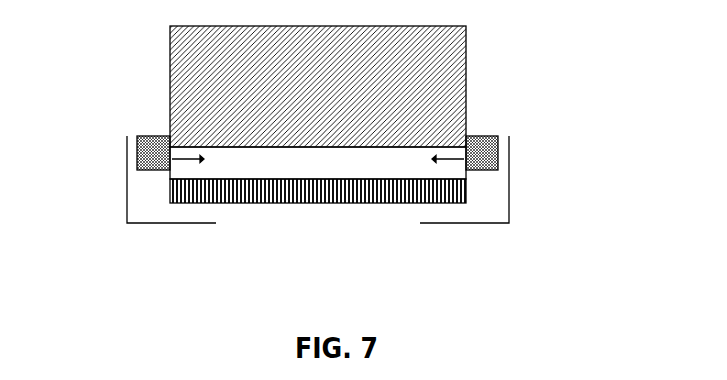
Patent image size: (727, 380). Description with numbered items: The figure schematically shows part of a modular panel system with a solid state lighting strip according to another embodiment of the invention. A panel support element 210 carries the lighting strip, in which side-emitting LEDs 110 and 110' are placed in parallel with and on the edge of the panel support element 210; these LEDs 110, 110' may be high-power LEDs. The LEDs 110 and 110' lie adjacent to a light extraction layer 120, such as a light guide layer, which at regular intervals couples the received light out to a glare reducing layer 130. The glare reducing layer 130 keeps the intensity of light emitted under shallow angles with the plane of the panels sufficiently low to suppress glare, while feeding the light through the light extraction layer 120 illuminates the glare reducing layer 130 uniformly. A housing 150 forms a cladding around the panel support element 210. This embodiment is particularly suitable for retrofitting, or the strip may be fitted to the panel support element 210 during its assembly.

The panel support element 210 is at (453, 72).
The light extraction layer 120 is at (226, 168).
The glare reducing layer 130 is at (400, 186).
The side-emitting LED 110 is at (107, 158).
The side-emitting LED 110' is at (534, 153).
The housing 150 is at (509, 223).